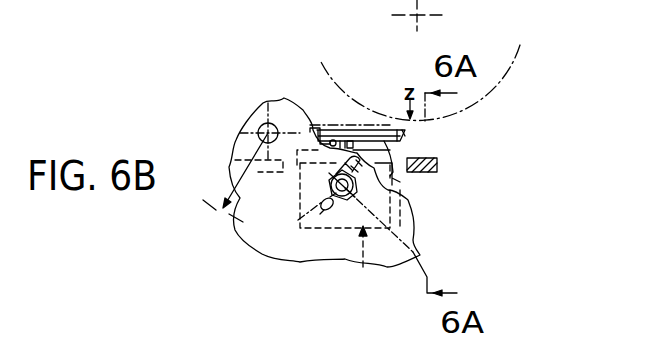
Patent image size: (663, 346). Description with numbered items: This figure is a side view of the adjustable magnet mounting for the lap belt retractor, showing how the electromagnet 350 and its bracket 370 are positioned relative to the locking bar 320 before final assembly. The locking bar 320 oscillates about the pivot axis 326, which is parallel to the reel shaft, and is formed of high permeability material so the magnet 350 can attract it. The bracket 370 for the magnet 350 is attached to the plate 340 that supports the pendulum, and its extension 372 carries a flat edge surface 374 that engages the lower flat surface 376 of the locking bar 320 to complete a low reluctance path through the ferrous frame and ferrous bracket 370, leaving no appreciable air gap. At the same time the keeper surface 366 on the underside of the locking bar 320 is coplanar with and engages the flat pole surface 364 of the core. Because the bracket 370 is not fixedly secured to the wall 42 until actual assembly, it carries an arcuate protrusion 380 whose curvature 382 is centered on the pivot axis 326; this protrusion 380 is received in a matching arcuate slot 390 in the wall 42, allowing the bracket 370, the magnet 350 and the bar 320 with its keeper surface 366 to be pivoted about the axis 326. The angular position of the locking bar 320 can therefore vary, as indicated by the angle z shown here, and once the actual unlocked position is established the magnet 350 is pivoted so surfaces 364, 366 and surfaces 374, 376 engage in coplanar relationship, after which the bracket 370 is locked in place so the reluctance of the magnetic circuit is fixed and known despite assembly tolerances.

The wall 42 is at (272, 247).
The locking bar 320 is at (397, 141).
The pivot axis 326 is at (261, 124).
The plate 340 is at (438, 163).
The electromagnet 350 is at (398, 183).
The flat pole surface 364 is at (360, 141).
The keeper surface 366 is at (318, 128).
The bracket 370 is at (361, 267).
The extension 372 is at (379, 130).
The flat edge surface 374 is at (345, 141).
The lower flat surface 376 is at (404, 179).
The arcuate protrusion 380 is at (342, 205).
The curvature 382 is at (233, 183).
The arcuate slot 390 is at (326, 210).